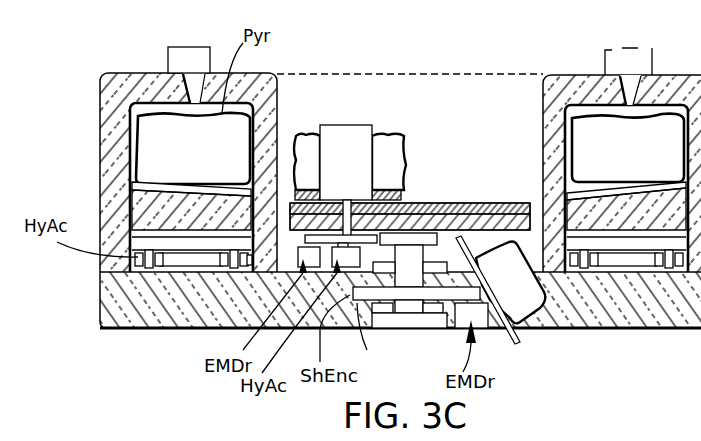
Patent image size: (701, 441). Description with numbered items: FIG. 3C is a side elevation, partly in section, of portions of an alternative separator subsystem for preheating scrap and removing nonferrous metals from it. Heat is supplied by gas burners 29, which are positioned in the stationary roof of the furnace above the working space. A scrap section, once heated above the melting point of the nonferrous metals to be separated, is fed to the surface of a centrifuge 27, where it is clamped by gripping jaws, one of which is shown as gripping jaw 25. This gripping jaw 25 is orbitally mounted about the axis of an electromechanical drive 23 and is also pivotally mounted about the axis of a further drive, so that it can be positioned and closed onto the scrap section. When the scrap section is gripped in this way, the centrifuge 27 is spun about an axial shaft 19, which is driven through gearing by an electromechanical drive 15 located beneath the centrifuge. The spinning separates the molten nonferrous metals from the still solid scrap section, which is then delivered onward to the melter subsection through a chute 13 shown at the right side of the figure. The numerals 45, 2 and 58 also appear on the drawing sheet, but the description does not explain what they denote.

The gas burner 29 is at (197, 62).
The pyroelectric detector element 45 is at (202, 159).
The gripping jaw 25 is at (352, 150).
The centrifuge 27 is at (416, 205).
The electromechanical drive 23 is at (297, 265).
The hydraulic actuator element 2 is at (348, 263).
The axial shaft 19 is at (418, 275).
The electromechanical drive 15 is at (483, 333).
The chute 13 is at (551, 331).
The adjacent figure reference 58 is at (622, 440).